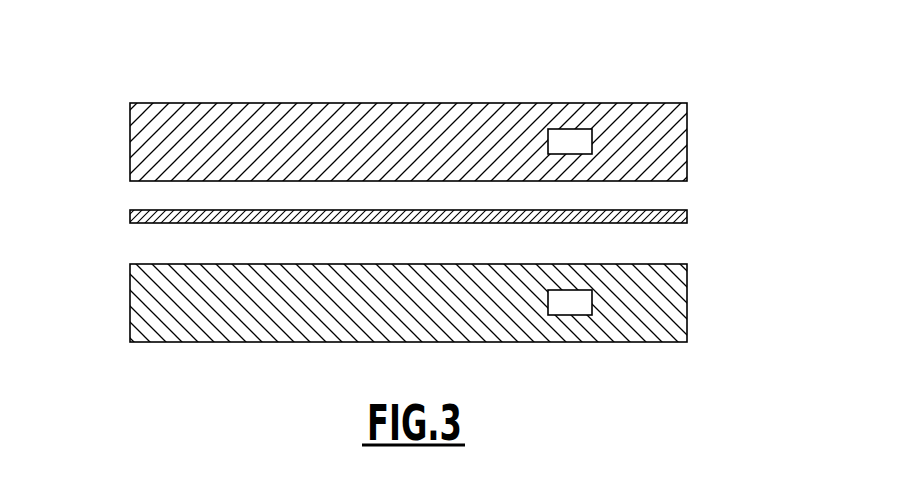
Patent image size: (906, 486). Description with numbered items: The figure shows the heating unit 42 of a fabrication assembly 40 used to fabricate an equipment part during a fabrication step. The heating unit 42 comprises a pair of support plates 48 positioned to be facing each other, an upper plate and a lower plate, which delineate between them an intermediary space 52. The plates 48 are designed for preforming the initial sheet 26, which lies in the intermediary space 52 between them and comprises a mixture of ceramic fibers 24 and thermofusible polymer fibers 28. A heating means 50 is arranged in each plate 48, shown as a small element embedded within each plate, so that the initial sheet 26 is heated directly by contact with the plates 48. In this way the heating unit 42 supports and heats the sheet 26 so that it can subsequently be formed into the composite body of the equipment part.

The fabrication assembly 40 is at (226, 92).
The heating unit 42 is at (721, 125).
The support plate 48 is at (669, 163).
The heating means 50 is at (566, 148).
The initial sheet 26 is at (692, 223).
The thermofusible polymer fibers 28 is at (590, 227).
The intermediary space 52 is at (158, 193).
The ceramic fibers 24 is at (184, 229).